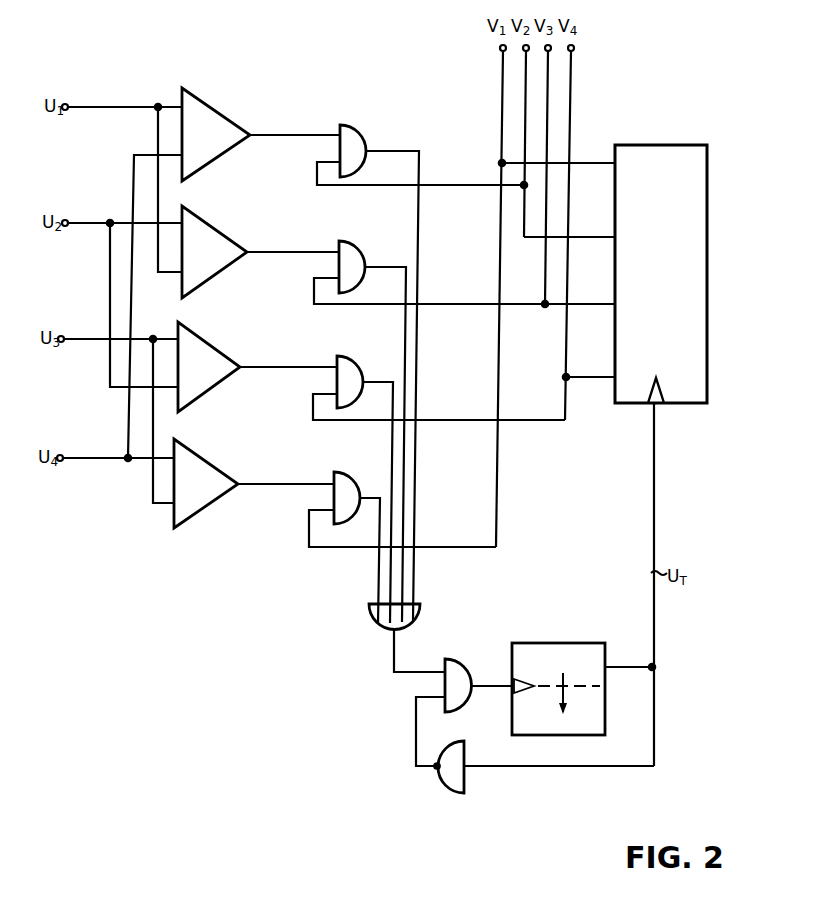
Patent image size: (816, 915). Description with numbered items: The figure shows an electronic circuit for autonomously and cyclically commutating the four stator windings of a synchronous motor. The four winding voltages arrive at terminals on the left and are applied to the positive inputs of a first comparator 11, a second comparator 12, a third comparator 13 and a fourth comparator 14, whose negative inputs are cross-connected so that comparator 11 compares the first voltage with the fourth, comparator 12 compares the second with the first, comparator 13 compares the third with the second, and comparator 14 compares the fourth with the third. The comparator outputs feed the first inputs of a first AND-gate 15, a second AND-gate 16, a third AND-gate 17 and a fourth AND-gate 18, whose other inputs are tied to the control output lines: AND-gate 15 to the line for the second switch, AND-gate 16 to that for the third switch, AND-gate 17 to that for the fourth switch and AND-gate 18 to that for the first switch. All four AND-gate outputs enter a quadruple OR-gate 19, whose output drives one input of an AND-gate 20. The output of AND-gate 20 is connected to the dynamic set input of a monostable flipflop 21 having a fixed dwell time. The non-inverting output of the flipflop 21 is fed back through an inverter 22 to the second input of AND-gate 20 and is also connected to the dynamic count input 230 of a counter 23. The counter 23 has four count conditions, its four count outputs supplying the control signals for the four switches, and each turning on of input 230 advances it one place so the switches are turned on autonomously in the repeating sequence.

The first comparator 11 is at (223, 117).
The second comparator 12 is at (221, 233).
The third comparator 13 is at (218, 357).
The fourth comparator 14 is at (204, 495).
The first AND-gate 15 is at (355, 138).
The second AND-gate 16 is at (353, 254).
The third AND-gate 17 is at (350, 371).
The fourth AND-gate 18 is at (350, 487).
The quadruple OR-gate 19 is at (370, 613).
The AND-gate 20 is at (456, 668).
The monostable flipflop 21 is at (568, 650).
The inverter 22 is at (452, 778).
The counter 23 is at (670, 145).
The dynamic count input 230 is at (661, 400).